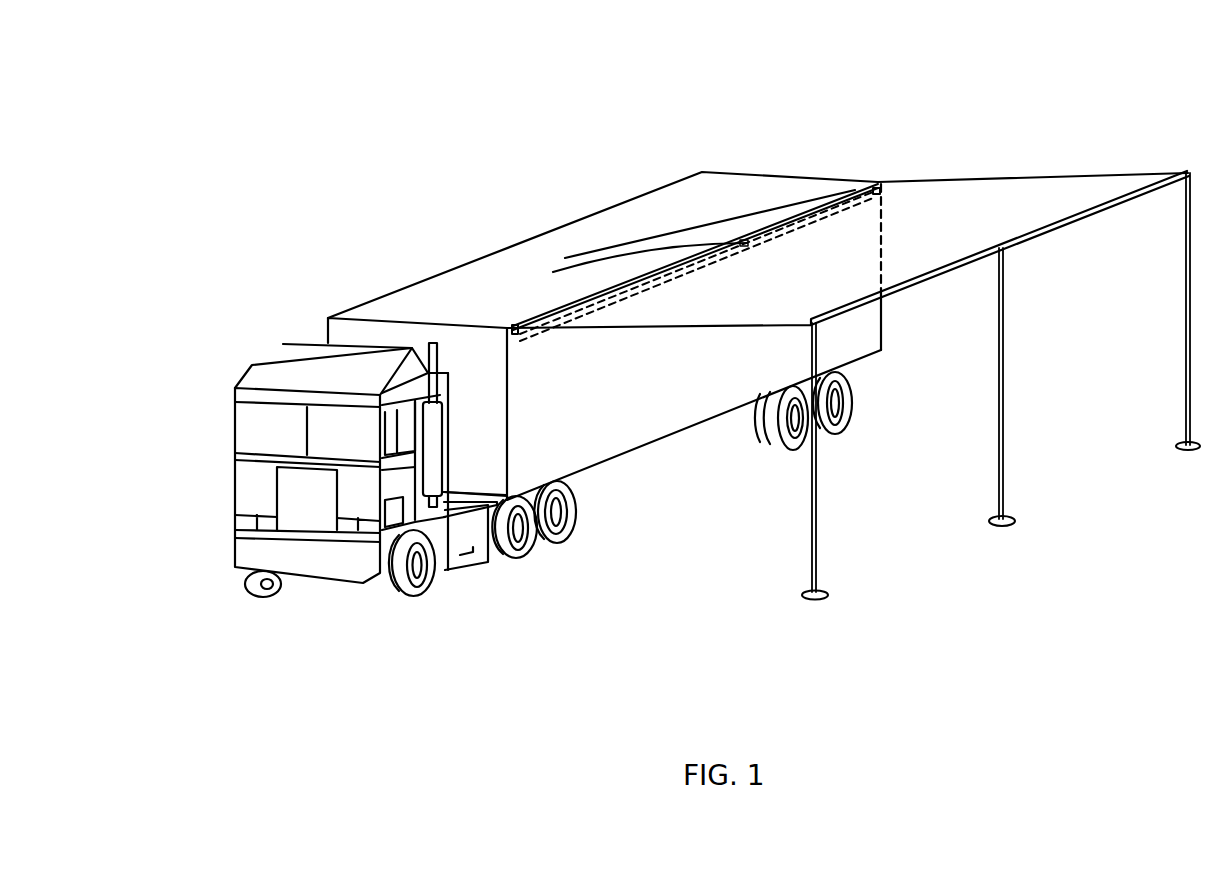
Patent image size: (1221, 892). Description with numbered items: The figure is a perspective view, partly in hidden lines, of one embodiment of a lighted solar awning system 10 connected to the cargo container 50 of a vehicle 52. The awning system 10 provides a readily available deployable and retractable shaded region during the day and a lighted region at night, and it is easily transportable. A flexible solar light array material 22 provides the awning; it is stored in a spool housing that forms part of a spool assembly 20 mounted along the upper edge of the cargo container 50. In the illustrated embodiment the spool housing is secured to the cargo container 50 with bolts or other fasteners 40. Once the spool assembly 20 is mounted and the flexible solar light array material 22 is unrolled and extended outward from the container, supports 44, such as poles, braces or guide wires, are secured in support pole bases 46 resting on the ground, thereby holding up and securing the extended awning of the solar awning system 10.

The lighted solar awning system 10 is at (143, 187).
The spool assembly 20 is at (673, 273).
The flexible solar light array material 22 is at (1062, 190).
The bolts or other fasteners 40 is at (514, 328).
The supports 44 is at (992, 462).
The support pole bases 46 is at (1008, 526).
The cargo container 50 is at (648, 205).
The vehicle 52 is at (290, 350).